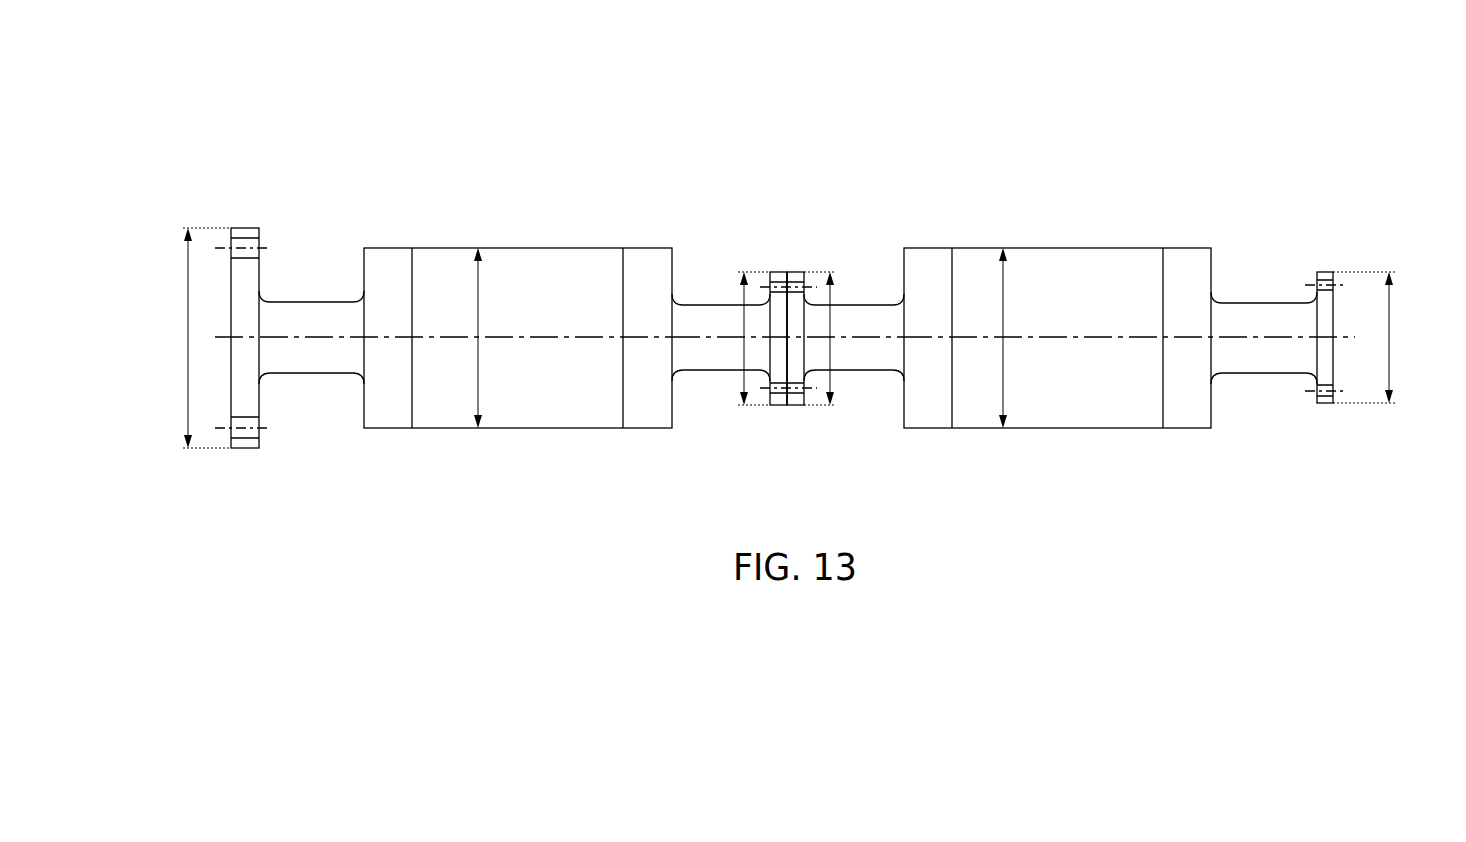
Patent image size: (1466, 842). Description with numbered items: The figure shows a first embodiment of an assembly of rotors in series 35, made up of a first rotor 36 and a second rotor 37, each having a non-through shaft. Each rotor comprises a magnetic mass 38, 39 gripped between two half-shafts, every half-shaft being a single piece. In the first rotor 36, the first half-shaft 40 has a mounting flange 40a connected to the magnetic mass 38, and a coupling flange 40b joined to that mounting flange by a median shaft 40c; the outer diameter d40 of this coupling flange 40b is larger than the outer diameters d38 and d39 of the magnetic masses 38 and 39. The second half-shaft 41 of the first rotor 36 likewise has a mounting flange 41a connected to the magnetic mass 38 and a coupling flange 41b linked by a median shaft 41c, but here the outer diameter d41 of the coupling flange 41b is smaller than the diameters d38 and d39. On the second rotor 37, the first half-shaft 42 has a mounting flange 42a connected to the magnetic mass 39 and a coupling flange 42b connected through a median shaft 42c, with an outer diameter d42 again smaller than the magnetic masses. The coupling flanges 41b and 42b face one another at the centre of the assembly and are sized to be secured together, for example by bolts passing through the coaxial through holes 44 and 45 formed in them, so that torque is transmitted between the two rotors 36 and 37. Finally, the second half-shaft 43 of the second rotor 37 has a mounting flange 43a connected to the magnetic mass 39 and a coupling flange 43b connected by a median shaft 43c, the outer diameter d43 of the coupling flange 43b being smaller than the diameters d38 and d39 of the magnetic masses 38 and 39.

The assembly of rotors in series 35 is at (1100, 50).
The first rotor 36 is at (514, 186).
The second rotor 37 is at (1135, 203).
The magnetic mass 38 is at (550, 243).
The magnetic mass 39 is at (1079, 243).
The first half-shaft 40 is at (305, 264).
The mounting flange 40a is at (385, 430).
The coupling flange 40b is at (243, 450).
The median shaft 40c is at (312, 374).
The second half-shaft 41 is at (720, 251).
The mounting flange 41a is at (643, 418).
The coupling flange 41b is at (780, 406).
The median shaft 41c is at (707, 353).
The first half-shaft 42 is at (850, 224).
The mounting flange 42a is at (925, 418).
The coupling flange 42b is at (793, 406).
The median shaft 42c is at (888, 330).
The second half-shaft 43 is at (1255, 274).
The mounting flange 43a is at (1178, 418).
The coupling flange 43b is at (1325, 305).
The median shaft 43c is at (1258, 372).
The coaxial through hole 44 is at (773, 272).
The coaxial through hole 45 is at (796, 272).
The outer diameter of magnetic mass d38 is at (480, 302).
The outer diameter of magnetic mass d39 is at (1005, 302).
The outer diameter of coupling flange d40 is at (188, 325).
The outer diameter of coupling flange d41 is at (744, 325).
The outer diameter of coupling flange d42 is at (830, 325).
The outer diameter of coupling flange d43 is at (1390, 352).